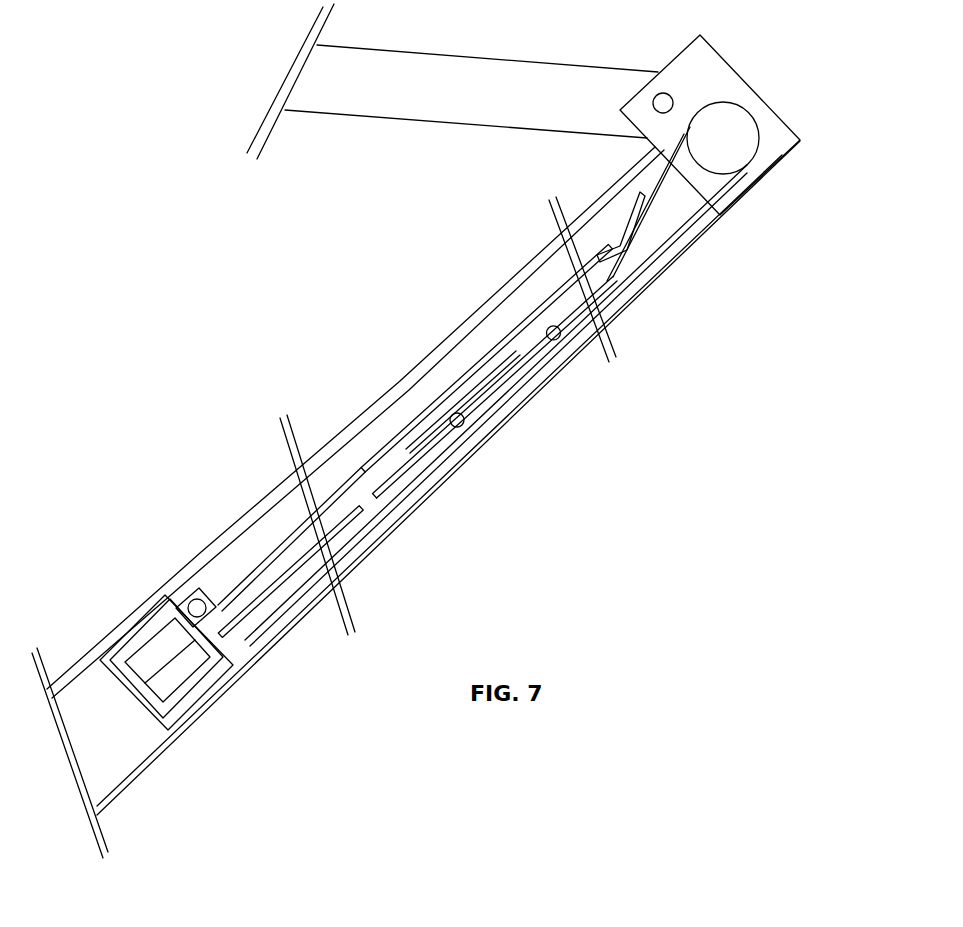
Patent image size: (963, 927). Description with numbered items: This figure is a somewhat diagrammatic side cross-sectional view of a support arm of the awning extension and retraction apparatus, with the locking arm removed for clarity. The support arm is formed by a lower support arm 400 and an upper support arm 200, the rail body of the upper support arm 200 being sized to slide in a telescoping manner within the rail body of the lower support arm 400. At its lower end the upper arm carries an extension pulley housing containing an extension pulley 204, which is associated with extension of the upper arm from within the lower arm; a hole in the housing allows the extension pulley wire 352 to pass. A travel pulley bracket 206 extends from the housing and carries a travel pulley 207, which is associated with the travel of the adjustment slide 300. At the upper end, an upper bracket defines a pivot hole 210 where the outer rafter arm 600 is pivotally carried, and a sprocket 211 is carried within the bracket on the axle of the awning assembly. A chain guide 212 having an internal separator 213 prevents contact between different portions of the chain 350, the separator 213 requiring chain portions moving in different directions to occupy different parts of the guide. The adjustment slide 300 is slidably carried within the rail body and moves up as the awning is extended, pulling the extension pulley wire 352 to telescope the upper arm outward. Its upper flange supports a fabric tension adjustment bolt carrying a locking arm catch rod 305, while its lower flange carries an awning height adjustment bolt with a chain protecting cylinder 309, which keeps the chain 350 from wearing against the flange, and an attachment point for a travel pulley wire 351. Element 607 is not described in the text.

The upper support arm 200 is at (735, 222).
The extension pulley 204 is at (155, 650).
The travel pulley bracket 206 is at (197, 600).
The travel pulley 207 is at (203, 595).
The pivot hole 210 is at (678, 95).
The sprocket 211 is at (747, 147).
The chain guide 212 is at (608, 220).
The internal separator 213 is at (647, 250).
The adjustment slide 300 is at (500, 410).
The locking arm catch rod 305 is at (548, 328).
The chain protecting cylinder 309 is at (465, 427).
The chain 350 is at (402, 425).
The travel pulley wire 351 is at (340, 470).
The extension pulley wire 352 is at (230, 630).
The lower support arm 400 is at (177, 758).
The outer rafter arm 600 is at (397, 132).
The mounting hole 607 is at (653, 102).